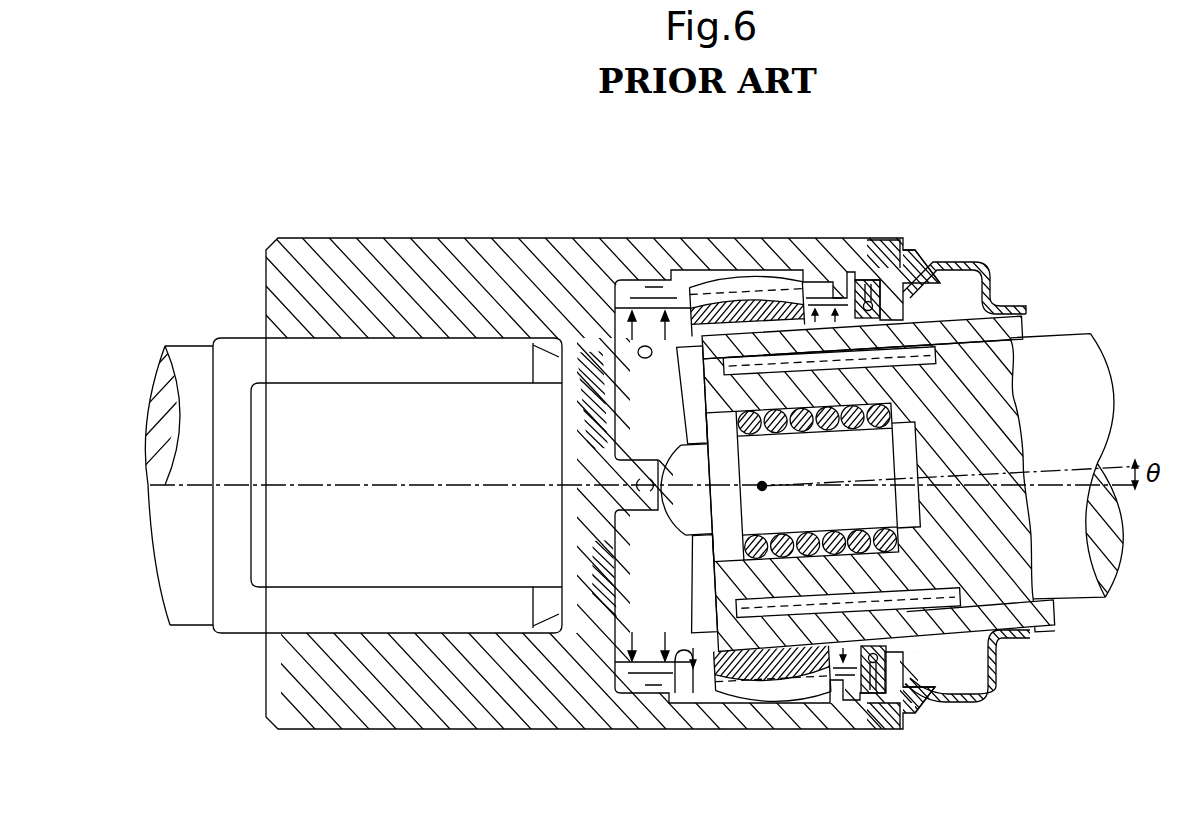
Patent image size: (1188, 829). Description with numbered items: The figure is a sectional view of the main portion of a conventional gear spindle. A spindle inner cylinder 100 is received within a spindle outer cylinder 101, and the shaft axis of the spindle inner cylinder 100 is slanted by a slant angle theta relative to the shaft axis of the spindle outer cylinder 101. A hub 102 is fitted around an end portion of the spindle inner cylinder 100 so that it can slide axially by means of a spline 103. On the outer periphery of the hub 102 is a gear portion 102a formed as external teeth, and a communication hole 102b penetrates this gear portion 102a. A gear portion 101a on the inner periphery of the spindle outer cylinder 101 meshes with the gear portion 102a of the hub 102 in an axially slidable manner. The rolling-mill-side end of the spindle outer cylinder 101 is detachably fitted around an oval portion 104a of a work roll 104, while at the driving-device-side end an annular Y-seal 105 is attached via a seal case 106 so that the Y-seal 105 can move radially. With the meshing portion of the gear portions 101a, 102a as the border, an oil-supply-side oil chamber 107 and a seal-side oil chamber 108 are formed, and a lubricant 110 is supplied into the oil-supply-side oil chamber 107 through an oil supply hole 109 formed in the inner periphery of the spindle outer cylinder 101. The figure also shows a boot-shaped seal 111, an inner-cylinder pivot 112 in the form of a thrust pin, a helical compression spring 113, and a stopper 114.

The spindle inner cylinder 100 is at (1097, 385).
The spindle outer cylinder 101 is at (373, 273).
The gear portion 101a is at (686, 662).
The hub 102 is at (670, 495).
The gear portion 102a is at (773, 280).
The communication hole 102b is at (765, 630).
The spline 103 is at (908, 620).
The work roll 104 is at (190, 362).
The oval portion 104a is at (450, 405).
The Y-seal 105 is at (905, 262).
The seal case 106 is at (883, 256).
The oil-supply-side oil chamber 107 is at (672, 593).
The seal-side oil chamber 108 is at (837, 300).
The oil supply hole 109 is at (645, 360).
The lubricant 110 is at (630, 280).
The boot-shaped seal 111 is at (980, 264).
The inner-cylinder pivot 112 is at (690, 515).
The helical compression spring 113 is at (792, 540).
The stopper 114 is at (712, 560).